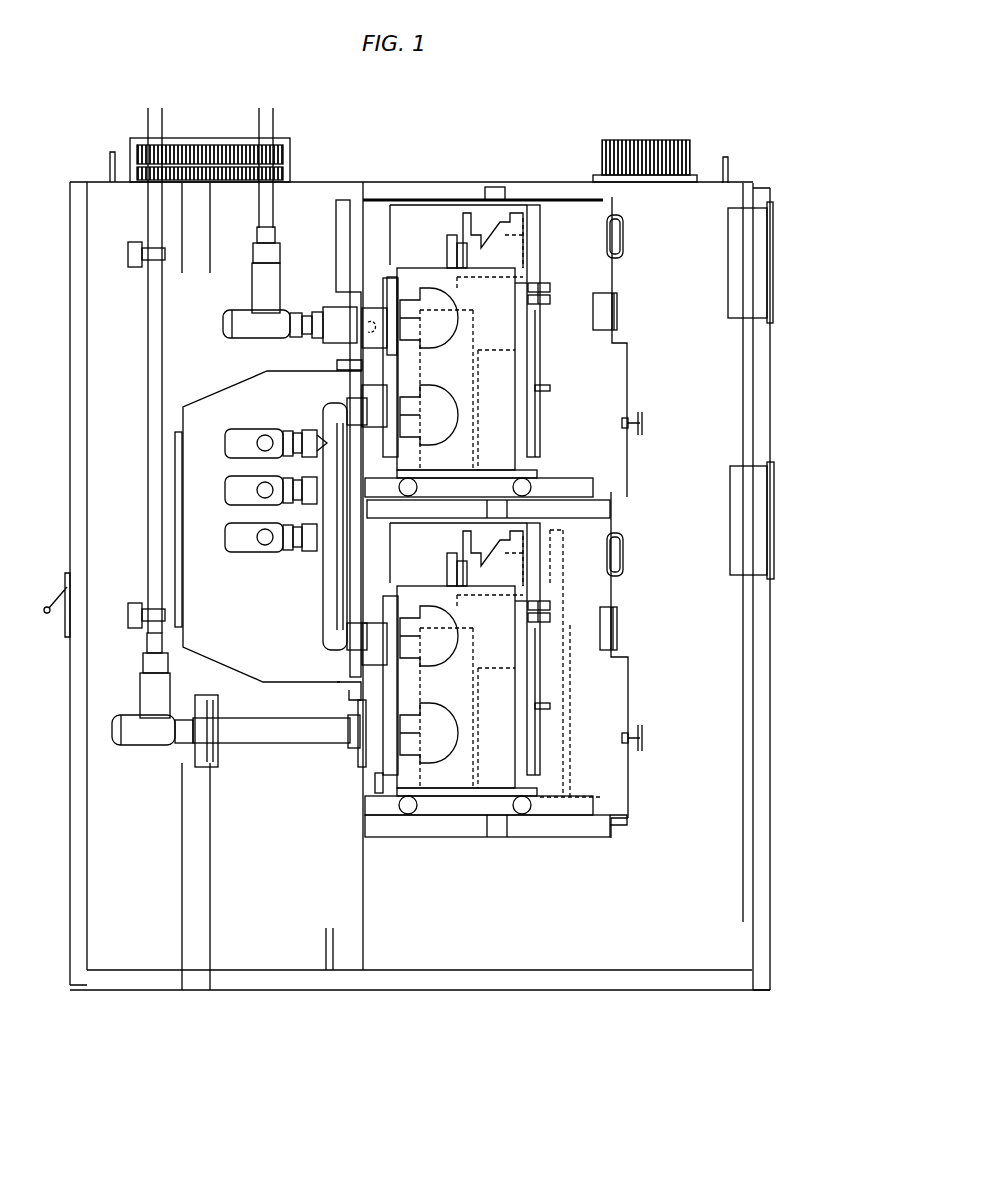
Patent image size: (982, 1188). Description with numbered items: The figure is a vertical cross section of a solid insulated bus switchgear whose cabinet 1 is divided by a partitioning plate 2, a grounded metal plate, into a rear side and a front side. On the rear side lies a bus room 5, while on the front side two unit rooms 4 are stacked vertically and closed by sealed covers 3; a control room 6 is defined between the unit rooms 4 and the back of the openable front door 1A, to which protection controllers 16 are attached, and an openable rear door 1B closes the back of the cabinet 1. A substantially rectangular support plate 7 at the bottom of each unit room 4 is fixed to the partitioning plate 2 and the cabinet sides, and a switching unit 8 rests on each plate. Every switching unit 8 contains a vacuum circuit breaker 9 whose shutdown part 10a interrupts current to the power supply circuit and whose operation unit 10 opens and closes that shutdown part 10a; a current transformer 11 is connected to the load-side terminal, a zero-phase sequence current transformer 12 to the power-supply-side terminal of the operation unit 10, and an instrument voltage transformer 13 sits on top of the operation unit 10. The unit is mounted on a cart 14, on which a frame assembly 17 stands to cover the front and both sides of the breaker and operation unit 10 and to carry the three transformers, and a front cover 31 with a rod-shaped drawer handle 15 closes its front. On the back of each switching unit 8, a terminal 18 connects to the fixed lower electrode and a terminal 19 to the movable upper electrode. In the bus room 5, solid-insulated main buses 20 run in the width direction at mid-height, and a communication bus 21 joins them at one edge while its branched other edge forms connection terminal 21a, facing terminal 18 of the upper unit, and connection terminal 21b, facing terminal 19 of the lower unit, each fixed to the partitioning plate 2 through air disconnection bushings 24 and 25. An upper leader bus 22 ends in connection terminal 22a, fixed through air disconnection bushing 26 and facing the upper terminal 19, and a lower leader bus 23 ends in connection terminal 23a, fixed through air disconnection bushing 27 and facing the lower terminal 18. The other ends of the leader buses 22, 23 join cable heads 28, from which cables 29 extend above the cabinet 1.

The cabinet 1 is at (762, 188).
The front door 1A is at (772, 428).
The rear door 1B is at (68, 518).
The partitioning plate 2 is at (365, 945).
The sealed cover 3 is at (615, 268).
The unit room 4 is at (615, 213).
The bus room 5 is at (262, 950).
The control room 6 is at (740, 957).
The support plate 7 is at (600, 511).
The switching unit 8 is at (553, 207).
The vacuum circuit breaker 9 is at (486, 345).
The operation unit 10 is at (500, 427).
The shutdown part 10a is at (462, 445).
The current transformer 11 is at (385, 272).
The zero-phase sequence current transformer 12 is at (355, 622).
The instrument voltage transformer 13 is at (480, 205).
The cart 14 is at (505, 480).
The drawer handle 15 is at (550, 388).
The protection controller 16 is at (775, 264).
The frame assembly 17 is at (432, 265).
The terminal 18 is at (415, 398).
The terminal 19 is at (411, 290).
The main bus 20 is at (232, 545).
The communication bus 21 is at (335, 590).
The connection terminal 21a is at (362, 405).
The connection terminal 21b is at (362, 645).
The upper leader bus 22 is at (302, 328).
The connection terminal 22a is at (362, 323).
The lower leader bus 23 is at (255, 735).
The connection terminal 23a is at (352, 742).
The air disconnection bushing 24 is at (340, 366).
The air disconnection bushing 25 is at (350, 690).
The air disconnection bushing 26 is at (388, 300).
The air disconnection bushing 27 is at (370, 745).
The cable head 28 is at (252, 293).
The cable 29 is at (259, 216).
The front cover 31 is at (540, 377).